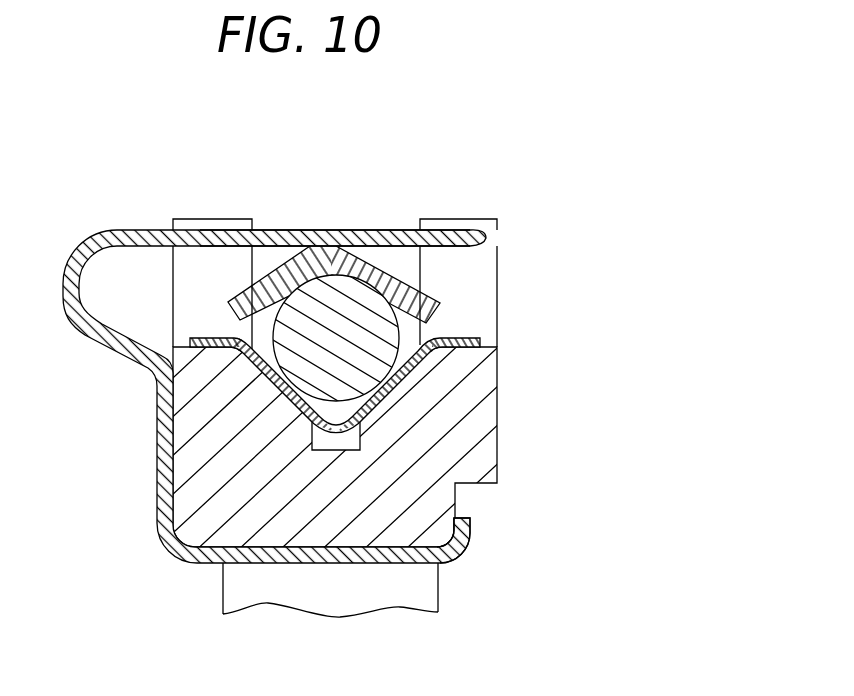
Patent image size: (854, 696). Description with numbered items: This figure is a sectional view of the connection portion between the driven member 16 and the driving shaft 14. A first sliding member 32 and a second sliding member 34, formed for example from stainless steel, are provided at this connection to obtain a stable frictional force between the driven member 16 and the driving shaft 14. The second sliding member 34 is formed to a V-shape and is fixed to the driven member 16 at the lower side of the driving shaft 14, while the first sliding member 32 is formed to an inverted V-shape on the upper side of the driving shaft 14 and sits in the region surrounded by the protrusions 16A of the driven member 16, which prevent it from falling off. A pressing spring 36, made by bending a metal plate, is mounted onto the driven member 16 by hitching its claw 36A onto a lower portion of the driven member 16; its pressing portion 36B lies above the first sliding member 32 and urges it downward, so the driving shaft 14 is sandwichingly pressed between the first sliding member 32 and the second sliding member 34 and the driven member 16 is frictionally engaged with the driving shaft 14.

The driving shaft 14 is at (322, 296).
The driven member 16 is at (190, 455).
The protrusions 16A is at (213, 219).
The first sliding member 32 is at (373, 273).
The second sliding member 34 is at (467, 336).
The pressing spring 36 is at (113, 222).
The claw 36A is at (470, 520).
The pressing portion 36B is at (325, 240).